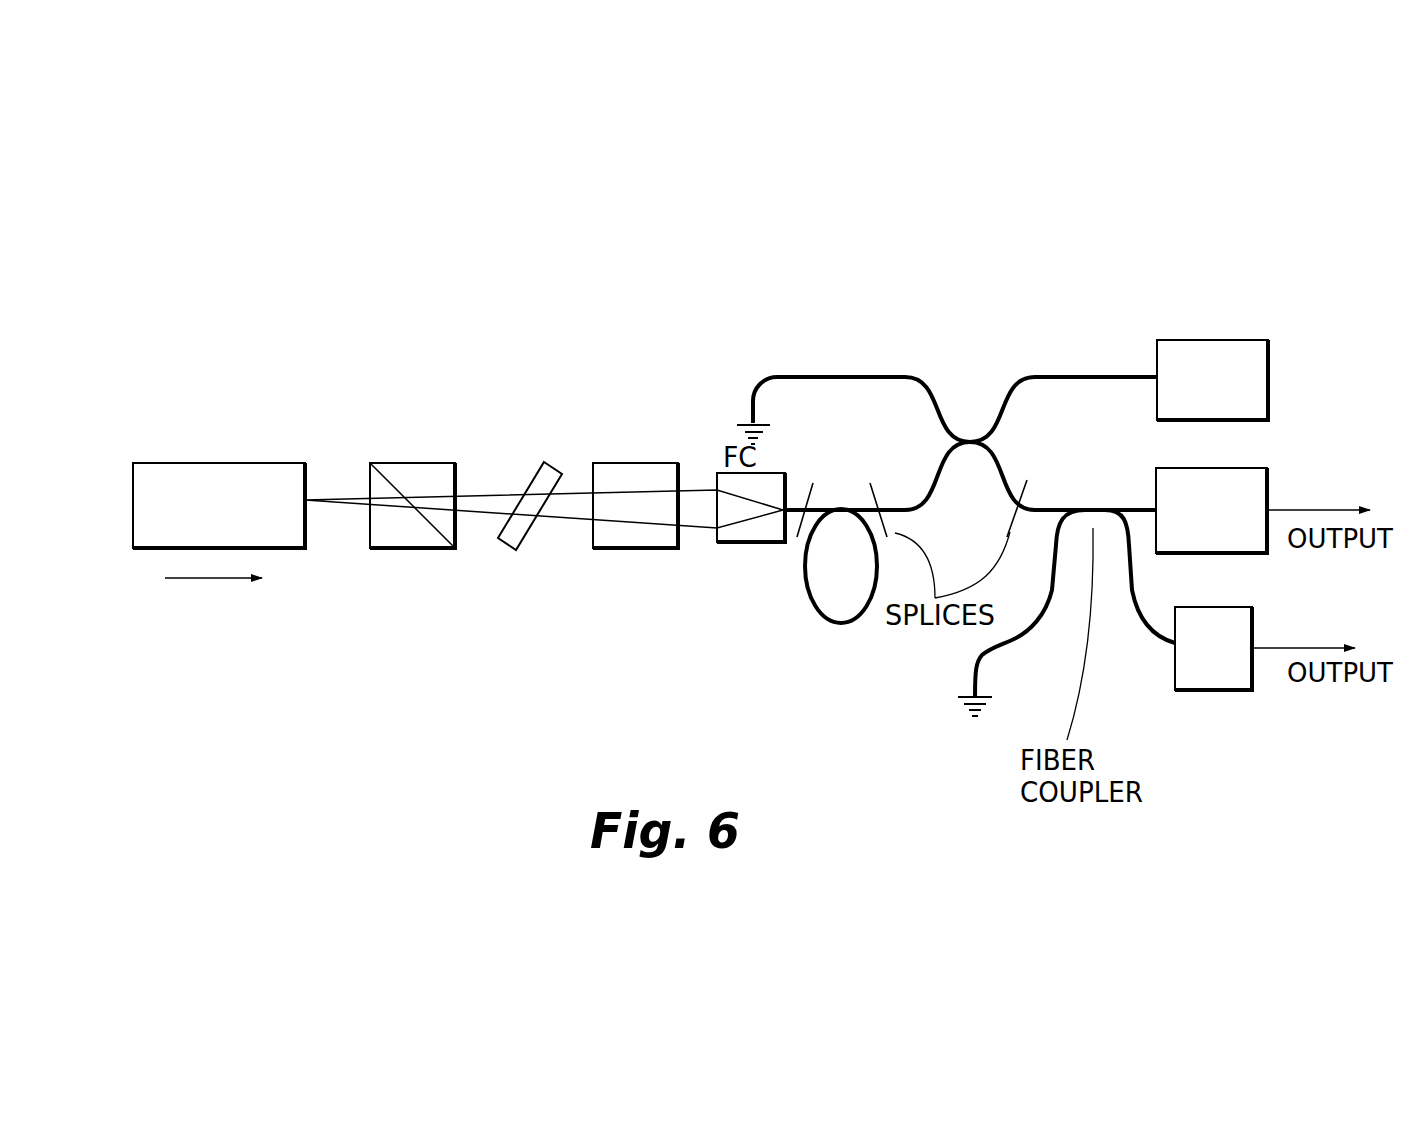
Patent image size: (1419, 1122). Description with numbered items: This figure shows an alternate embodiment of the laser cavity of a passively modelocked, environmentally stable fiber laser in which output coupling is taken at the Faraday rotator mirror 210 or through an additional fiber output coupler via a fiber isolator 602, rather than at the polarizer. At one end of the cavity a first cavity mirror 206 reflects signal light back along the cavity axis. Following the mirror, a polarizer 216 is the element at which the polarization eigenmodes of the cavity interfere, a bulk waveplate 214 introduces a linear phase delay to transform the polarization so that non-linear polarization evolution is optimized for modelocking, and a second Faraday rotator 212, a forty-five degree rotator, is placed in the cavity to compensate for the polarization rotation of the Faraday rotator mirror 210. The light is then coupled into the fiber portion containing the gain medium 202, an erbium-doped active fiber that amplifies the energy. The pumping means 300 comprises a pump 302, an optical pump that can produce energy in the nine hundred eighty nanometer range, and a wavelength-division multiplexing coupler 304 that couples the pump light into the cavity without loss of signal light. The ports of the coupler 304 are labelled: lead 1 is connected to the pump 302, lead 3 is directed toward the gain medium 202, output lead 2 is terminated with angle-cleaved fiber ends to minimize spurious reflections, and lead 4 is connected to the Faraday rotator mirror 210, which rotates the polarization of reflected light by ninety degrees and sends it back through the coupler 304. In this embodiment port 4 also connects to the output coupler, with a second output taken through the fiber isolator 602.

The first cavity mirror 206 is at (198, 463).
The polarizer 216 is at (427, 548).
The bulk waveplate 214 is at (520, 548).
The second Faraday rotator 212 is at (657, 550).
The gain medium 202 is at (843, 626).
The wavelength-division multiplexing coupler 304 is at (987, 347).
The pump 302 is at (1215, 340).
The pumping means 300 is at (1103, 312).
The Faraday rotator mirror 210 is at (1212, 553).
The fiber isolator 602 is at (1230, 690).
The lead 1 is at (1096, 359).
The output lead 2 is at (823, 392).
The lead 3 is at (848, 489).
The lead 4 is at (1095, 489).